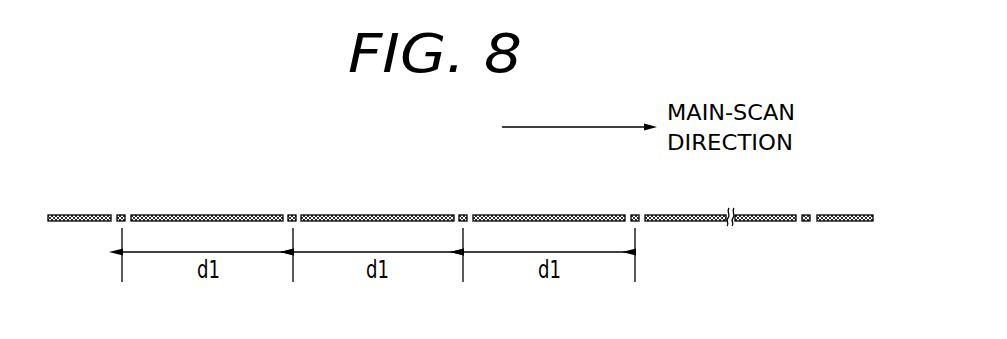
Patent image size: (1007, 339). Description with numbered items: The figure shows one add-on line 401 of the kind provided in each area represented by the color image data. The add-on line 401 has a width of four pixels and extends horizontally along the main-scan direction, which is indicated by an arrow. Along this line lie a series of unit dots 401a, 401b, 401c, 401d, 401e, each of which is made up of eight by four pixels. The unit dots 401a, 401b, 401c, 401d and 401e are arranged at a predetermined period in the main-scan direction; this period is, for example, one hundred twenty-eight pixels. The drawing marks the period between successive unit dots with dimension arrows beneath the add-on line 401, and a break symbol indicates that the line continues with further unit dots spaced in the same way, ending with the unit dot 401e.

The add-on line 401 is at (843, 221).
The unit dot 401a is at (125, 213).
The unit dot 401b is at (296, 213).
The unit dot 401c is at (467, 213).
The unit dot 401d is at (639, 213).
The unit dot 401e is at (809, 213).